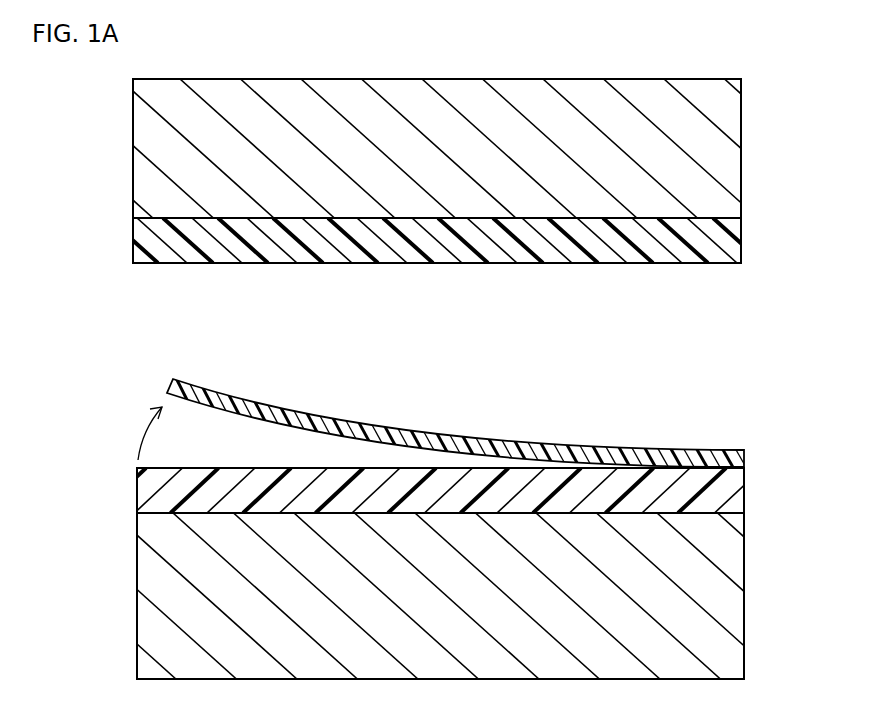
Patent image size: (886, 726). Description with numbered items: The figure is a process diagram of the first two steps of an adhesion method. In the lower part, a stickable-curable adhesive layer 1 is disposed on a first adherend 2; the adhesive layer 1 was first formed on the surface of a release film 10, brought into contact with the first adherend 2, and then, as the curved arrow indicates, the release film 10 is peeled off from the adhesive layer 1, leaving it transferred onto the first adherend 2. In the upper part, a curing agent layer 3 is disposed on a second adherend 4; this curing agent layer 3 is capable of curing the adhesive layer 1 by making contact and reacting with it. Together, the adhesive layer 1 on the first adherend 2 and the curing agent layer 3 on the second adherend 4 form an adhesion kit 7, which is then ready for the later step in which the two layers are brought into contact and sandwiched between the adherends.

The stickable-curable adhesive layer 1 is at (744, 483).
The first adherend 2 is at (744, 607).
The curing agent layer 3 is at (741, 237).
The second adherend 4 is at (741, 157).
The adhesion kit 7 is at (115, 278).
The release film 10 is at (379, 431).